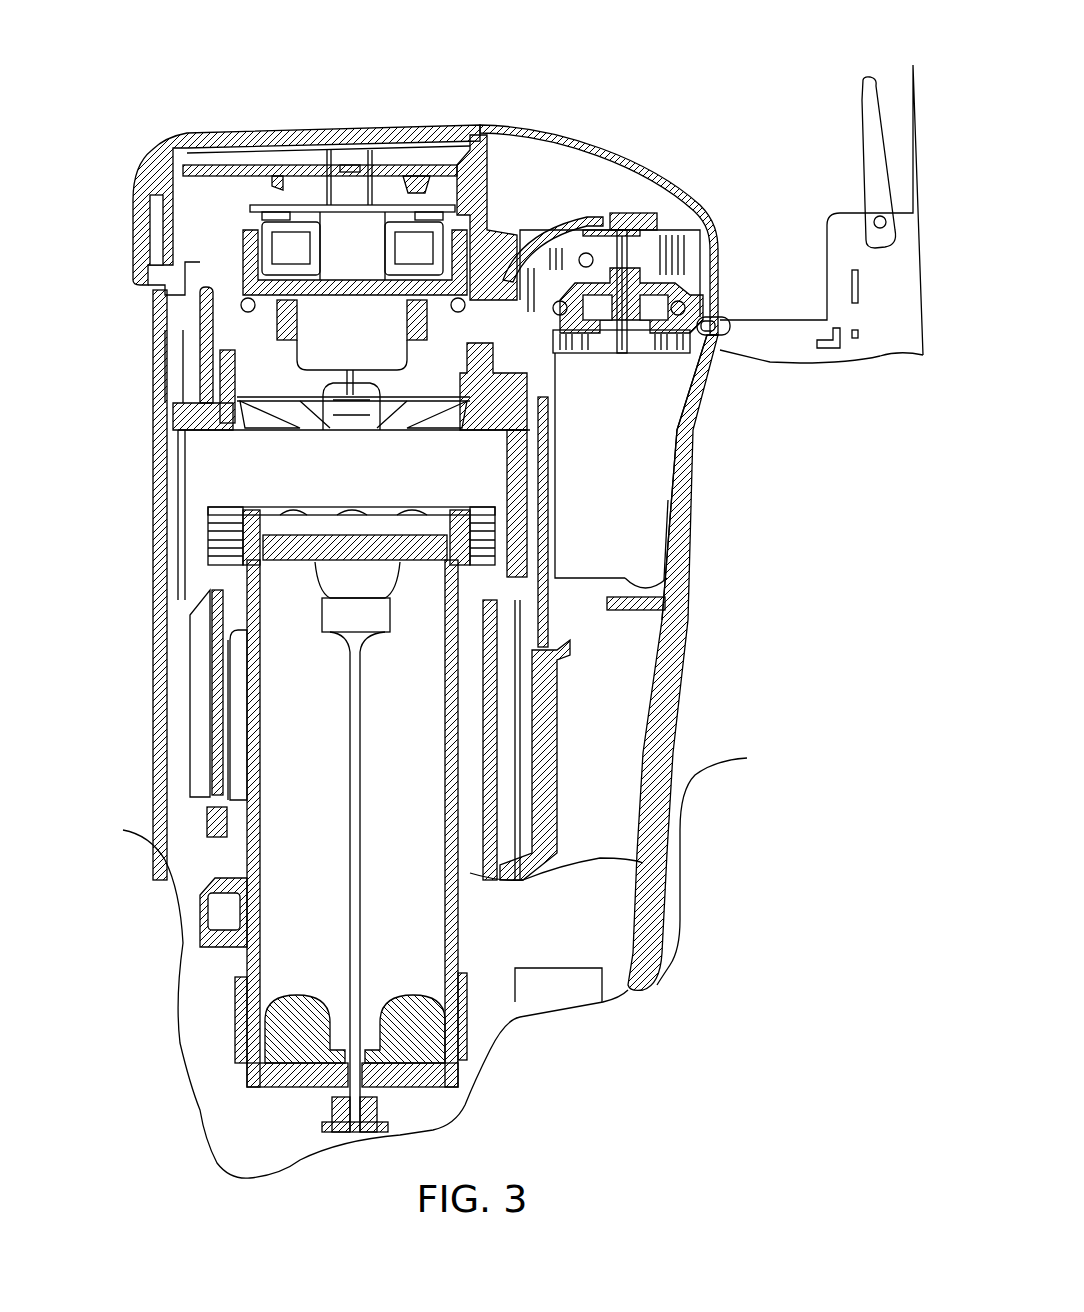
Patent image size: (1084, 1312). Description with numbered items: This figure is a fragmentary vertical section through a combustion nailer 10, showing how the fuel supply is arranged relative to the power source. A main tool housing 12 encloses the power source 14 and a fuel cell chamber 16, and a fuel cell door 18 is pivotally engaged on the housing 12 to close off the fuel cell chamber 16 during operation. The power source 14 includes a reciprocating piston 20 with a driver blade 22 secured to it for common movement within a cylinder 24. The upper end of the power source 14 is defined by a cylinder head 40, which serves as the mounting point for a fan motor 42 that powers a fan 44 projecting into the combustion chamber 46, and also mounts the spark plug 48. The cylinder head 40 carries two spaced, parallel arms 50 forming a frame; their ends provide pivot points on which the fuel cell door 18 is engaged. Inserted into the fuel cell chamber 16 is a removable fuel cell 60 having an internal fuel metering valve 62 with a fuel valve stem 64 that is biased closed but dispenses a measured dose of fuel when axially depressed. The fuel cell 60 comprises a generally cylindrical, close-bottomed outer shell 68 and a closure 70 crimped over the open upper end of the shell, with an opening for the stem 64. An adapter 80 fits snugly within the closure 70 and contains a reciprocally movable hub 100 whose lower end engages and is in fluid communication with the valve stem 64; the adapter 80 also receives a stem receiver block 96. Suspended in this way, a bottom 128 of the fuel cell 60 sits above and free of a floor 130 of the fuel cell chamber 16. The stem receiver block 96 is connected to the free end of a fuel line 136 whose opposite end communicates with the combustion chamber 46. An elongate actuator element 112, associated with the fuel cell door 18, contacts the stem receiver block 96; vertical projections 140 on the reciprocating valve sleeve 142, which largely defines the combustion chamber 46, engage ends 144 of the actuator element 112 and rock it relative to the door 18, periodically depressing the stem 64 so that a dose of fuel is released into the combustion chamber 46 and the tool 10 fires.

The combustion nailer 10 is at (133, 140).
The main tool housing 12 is at (683, 487).
The power source 14 is at (190, 378).
The fuel cell chamber 16 is at (690, 383).
The fuel cell door 18 is at (793, 348).
The reciprocating piston 20 is at (245, 583).
The driver blade 22 is at (355, 680).
The cylinder 24 is at (270, 770).
The cylinder head 40 is at (490, 235).
The fan motor 42 is at (343, 257).
The fan 44 is at (265, 425).
The combustion chamber 46 is at (348, 482).
The spark plug 48 is at (290, 318).
The arms 50 is at (675, 247).
The fuel cell 60 is at (685, 526).
The fuel metering valve 62 is at (612, 355).
The fuel valve stem 64 is at (645, 255).
The outer shell 68 is at (603, 492).
The closure 70 is at (667, 293).
The adapter 80 is at (685, 265).
The stem receiver block 96 is at (607, 255).
The hub 100 is at (603, 245).
The actuator element 112 is at (873, 147).
The bottom 128 is at (655, 580).
The floor 130 is at (650, 600).
The fuel line 136 is at (527, 240).
The vertical projections 140 is at (222, 285).
The valve sleeve 142 is at (185, 417).
The ends 144 is at (866, 80).